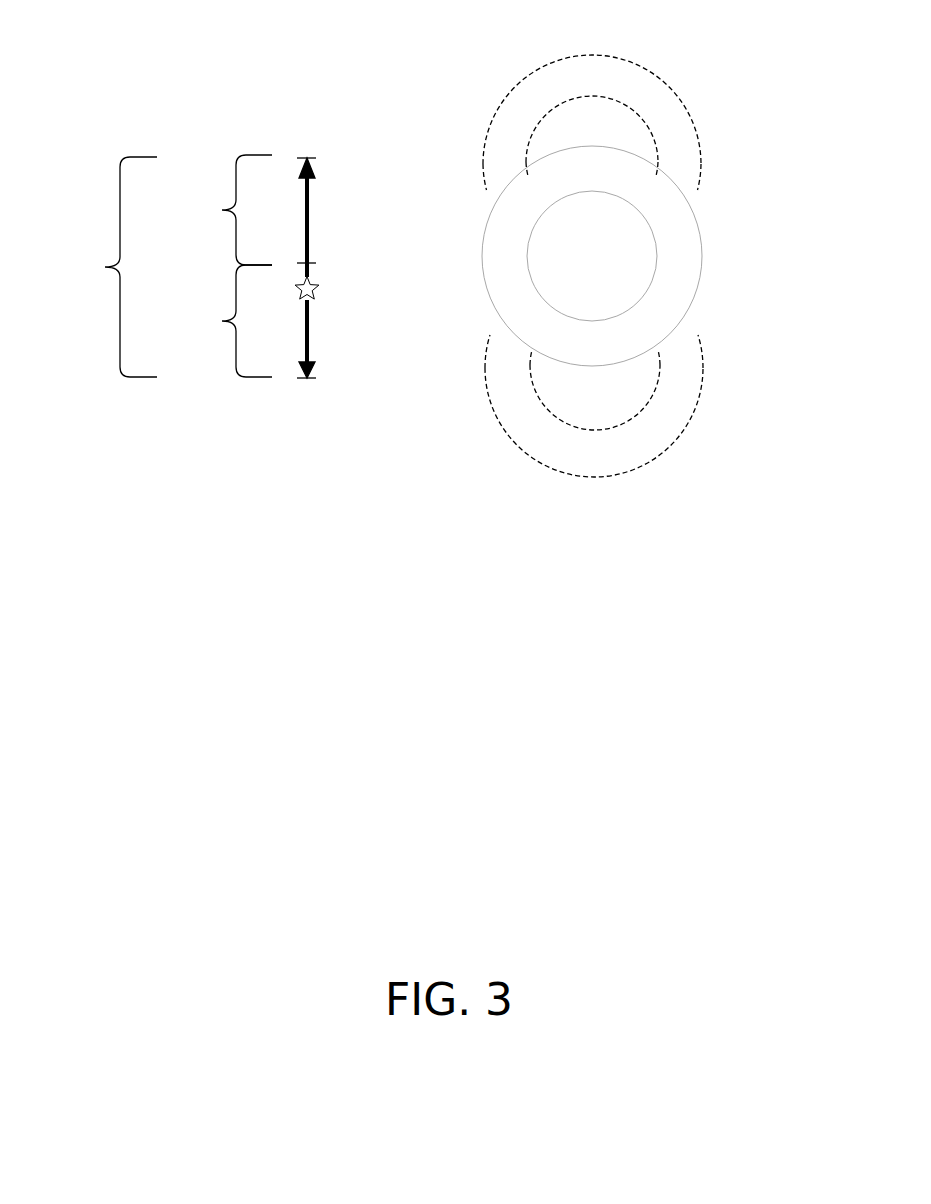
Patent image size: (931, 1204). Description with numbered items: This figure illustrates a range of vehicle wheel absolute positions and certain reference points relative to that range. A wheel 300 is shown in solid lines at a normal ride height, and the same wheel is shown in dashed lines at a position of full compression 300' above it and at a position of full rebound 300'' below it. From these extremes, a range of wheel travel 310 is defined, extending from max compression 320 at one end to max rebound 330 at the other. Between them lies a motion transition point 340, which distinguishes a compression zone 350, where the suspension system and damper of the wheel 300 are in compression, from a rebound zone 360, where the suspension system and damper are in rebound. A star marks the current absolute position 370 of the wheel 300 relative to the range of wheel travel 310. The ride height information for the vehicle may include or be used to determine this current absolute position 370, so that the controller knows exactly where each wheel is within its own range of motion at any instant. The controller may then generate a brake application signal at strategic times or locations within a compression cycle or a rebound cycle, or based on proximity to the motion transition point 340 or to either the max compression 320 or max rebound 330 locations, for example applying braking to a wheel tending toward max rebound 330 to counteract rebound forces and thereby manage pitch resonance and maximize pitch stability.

The wheel 300 is at (640, 256).
The wheel at position of full compression 300' is at (638, 122).
The wheel at position of full rebound 300'' is at (649, 406).
The range of wheel travel 310 is at (108, 267).
The max compression 320 is at (315, 160).
The max rebound 330 is at (316, 380).
The motion transition point 340 is at (315, 263).
The compression zone 350 is at (224, 210).
The rebound zone 360 is at (217, 321).
The current absolute position 370 is at (317, 296).